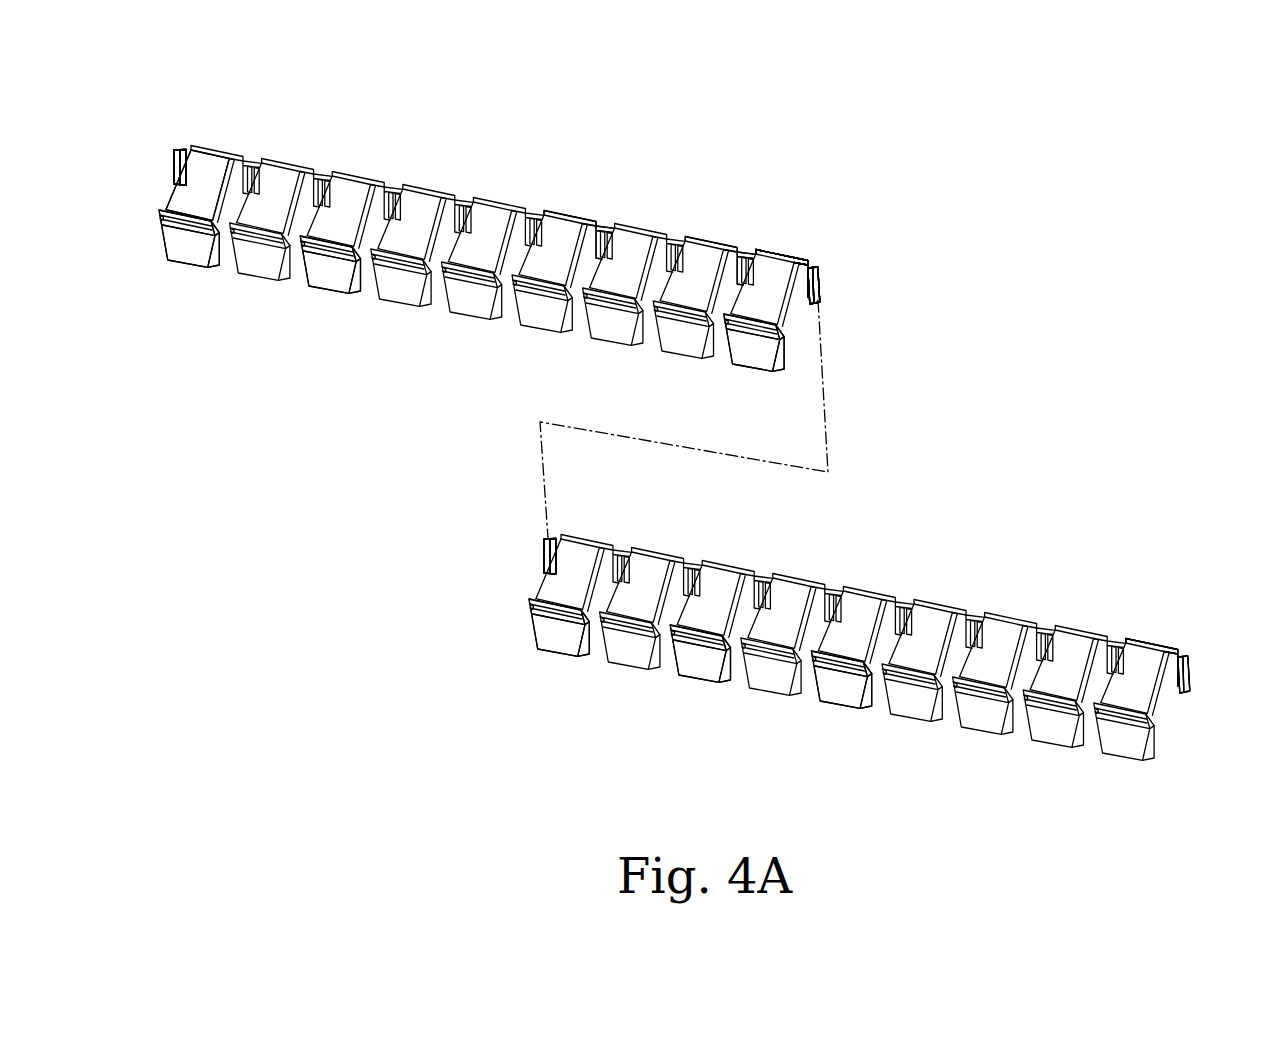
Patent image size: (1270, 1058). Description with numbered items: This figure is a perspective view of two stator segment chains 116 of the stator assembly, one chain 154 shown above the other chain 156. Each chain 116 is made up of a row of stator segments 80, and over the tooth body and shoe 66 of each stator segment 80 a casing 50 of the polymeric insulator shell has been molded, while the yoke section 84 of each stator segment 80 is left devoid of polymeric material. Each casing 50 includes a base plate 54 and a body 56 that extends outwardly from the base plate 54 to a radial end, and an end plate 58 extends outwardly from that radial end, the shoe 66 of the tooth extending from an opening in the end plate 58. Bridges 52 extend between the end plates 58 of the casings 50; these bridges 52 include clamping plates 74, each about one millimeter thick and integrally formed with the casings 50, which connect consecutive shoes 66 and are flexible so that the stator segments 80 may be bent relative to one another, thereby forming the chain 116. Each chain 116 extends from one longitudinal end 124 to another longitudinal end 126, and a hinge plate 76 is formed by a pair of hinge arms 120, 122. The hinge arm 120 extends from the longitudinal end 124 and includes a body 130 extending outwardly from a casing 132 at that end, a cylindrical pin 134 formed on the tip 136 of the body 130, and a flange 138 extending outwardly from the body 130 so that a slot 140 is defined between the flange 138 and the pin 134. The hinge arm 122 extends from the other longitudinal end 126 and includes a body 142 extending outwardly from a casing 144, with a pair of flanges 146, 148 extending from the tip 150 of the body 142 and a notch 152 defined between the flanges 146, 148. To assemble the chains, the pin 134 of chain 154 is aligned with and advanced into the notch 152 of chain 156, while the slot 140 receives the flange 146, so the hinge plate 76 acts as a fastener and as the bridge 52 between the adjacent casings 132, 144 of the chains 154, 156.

The casing 50 is at (540, 228).
The bridge 52 is at (395, 200).
The base plate 54 is at (540, 312).
The body 56 is at (632, 245).
The end plate 58 is at (283, 172).
The shoe 66 is at (568, 203).
The clamping plate 74 is at (321, 180).
The hinge plate 76 is at (840, 265).
The stator segment 80 is at (180, 282).
The yoke section 84 is at (555, 322).
The chain 116 is at (918, 120).
The hinge arm 120 is at (850, 280).
The hinge arm 122 is at (170, 138).
The longitudinal end 124 is at (777, 250).
The longitudinal end 126 is at (193, 153).
The body 130 is at (806, 256).
The casing 132 is at (785, 312).
The cylindrical pin 134 is at (822, 290).
The tip 136 is at (815, 270).
The flange 138 is at (812, 302).
The slot 140 is at (830, 310).
The body 142 is at (182, 176).
The casing 144 is at (213, 162).
The flange 146 is at (176, 160).
The flange 148 is at (185, 150).
The tip 150 is at (180, 194).
The notch 152 is at (163, 144).
The chain 154 is at (333, 320).
The chain 156 is at (848, 744).